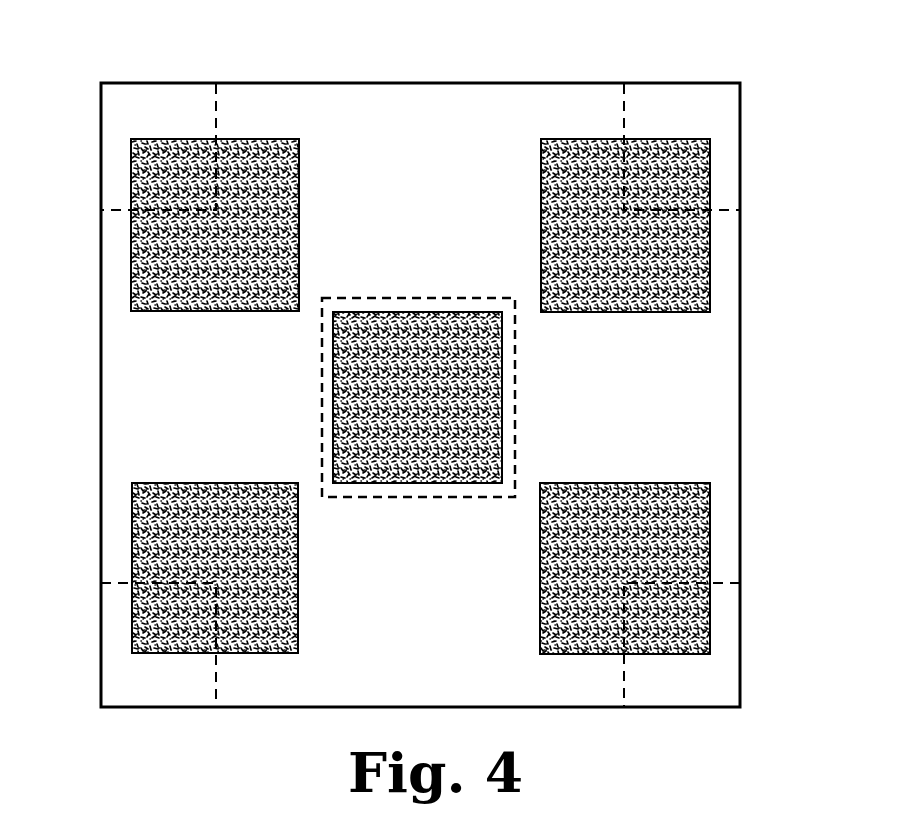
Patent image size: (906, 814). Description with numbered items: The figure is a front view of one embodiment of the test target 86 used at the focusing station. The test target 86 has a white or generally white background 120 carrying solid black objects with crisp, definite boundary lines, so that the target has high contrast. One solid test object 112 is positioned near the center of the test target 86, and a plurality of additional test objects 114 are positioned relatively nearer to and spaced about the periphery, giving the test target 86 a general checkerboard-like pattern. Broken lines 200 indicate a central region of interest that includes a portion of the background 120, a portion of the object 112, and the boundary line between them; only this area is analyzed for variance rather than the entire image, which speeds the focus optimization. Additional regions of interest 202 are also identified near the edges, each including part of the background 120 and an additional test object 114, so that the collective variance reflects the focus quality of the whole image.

The test target 86 is at (429, 394).
The test object 112 is at (490, 408).
The additional test objects 114 is at (258, 160).
The background 120 is at (400, 108).
The region of interest 200 is at (510, 362).
The additional regions of interest 202 is at (124, 153).